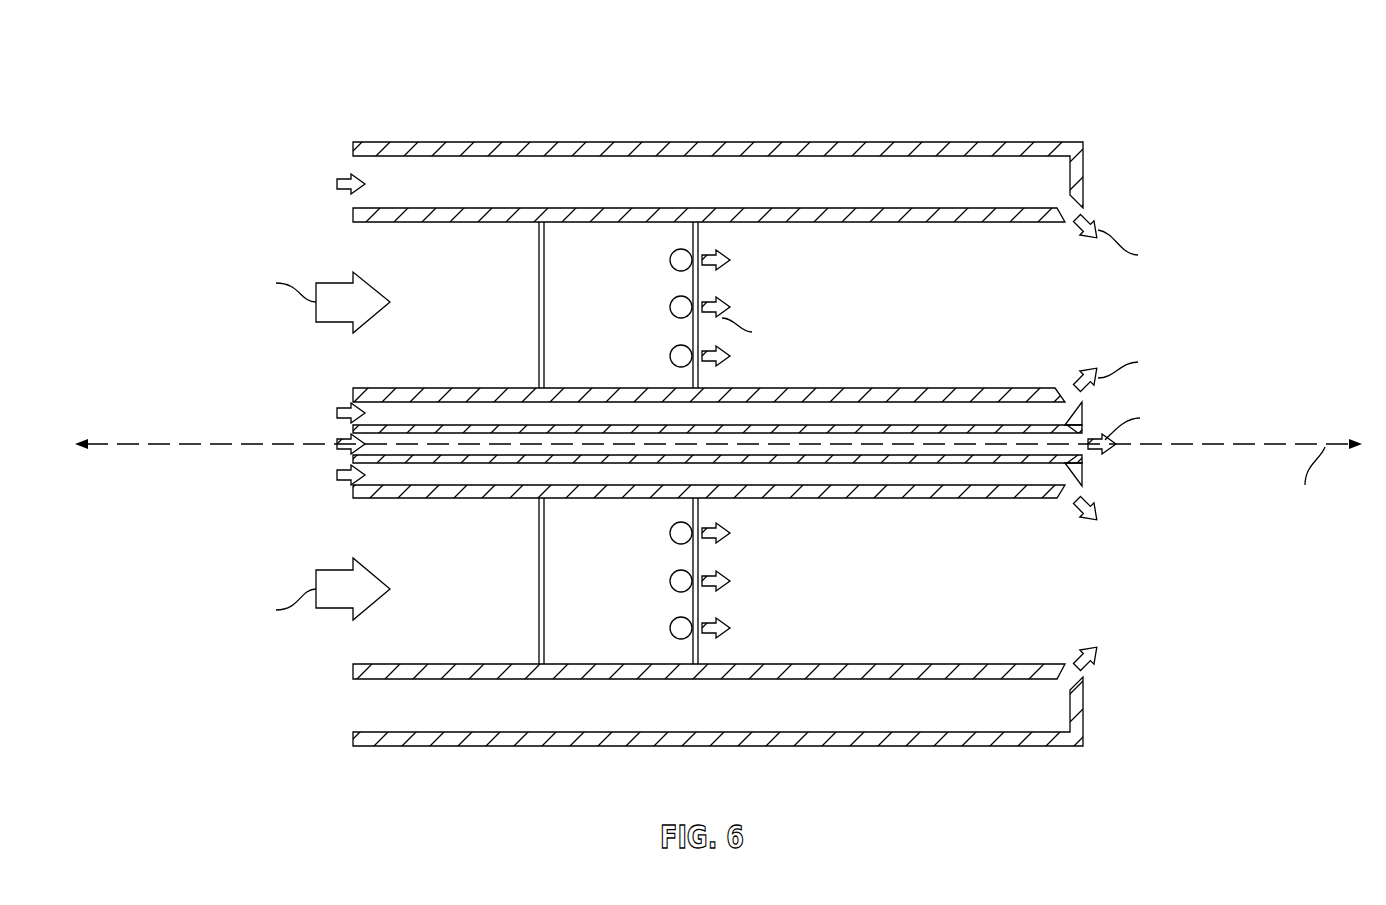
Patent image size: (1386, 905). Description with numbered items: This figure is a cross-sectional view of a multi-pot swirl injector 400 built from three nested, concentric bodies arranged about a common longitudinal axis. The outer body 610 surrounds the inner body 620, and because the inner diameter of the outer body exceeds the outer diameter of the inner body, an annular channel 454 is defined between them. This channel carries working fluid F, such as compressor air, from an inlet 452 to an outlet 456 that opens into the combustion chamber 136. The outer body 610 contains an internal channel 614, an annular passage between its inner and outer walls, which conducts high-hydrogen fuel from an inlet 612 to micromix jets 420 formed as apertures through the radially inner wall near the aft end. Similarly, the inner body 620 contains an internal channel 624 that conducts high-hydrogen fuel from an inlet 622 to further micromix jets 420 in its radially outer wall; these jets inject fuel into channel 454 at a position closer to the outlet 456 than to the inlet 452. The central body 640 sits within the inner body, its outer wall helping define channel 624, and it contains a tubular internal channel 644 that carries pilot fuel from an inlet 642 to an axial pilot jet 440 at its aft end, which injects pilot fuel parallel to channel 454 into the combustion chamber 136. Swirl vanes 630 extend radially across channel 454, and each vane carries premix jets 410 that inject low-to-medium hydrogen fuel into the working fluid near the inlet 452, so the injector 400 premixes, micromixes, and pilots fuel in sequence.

The multi-pot swirl injector 400 is at (667, 116).
The outer body 610 is at (428, 142).
The inlet 612 is at (365, 173).
The internal channel 614 is at (555, 170).
The inlet 452 is at (364, 256).
The annular channel 454 is at (848, 252).
The outlet 456 is at (1007, 255).
The micromix jet 420 is at (1063, 204).
The premix jet 410 is at (670, 260).
The swirl vane 630 is at (553, 288).
The inner body 620 is at (353, 392).
The inlet 622 is at (373, 412).
The internal channel 624 is at (472, 417).
The central body 640 is at (353, 420).
The inlet 642 is at (370, 446).
The internal channel 644 is at (915, 440).
The pilot jet 440 is at (1063, 447).
The combustion chamber 136 is at (1296, 400).